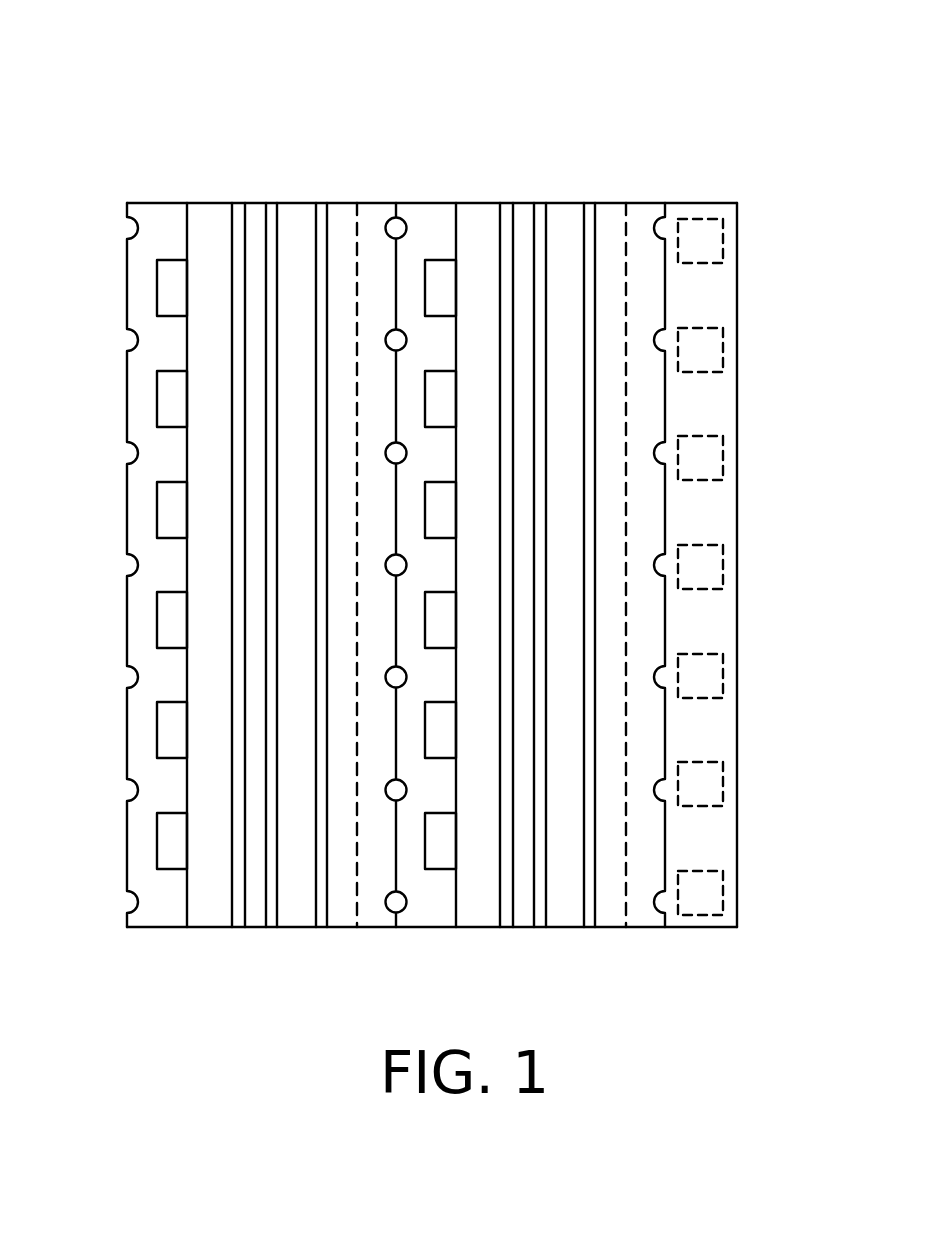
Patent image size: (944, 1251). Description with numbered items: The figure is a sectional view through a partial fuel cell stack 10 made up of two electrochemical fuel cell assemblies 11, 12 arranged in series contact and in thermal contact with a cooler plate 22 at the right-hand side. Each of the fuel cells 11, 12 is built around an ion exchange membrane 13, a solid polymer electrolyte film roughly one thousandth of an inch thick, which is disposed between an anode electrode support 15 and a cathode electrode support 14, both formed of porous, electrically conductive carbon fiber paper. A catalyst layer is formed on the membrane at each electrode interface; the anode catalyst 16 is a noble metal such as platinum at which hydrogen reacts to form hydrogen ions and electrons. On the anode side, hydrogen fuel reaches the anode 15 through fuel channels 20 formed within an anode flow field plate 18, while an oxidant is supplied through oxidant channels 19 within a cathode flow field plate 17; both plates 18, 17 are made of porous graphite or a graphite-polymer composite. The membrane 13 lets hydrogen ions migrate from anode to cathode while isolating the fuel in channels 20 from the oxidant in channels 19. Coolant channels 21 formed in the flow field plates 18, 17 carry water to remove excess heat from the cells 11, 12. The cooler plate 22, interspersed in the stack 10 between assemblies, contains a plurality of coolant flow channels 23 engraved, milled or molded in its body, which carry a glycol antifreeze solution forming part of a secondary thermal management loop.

The partial fuel cell stack 10 is at (145, 88).
The fuel cell assembly 11 is at (250, 940).
The fuel cell assembly 12 is at (552, 955).
The ion exchange membrane 13 is at (254, 202).
The cathode electrode support 14 is at (297, 202).
The anode electrode support 15 is at (207, 222).
The anode catalyst 16 is at (235, 202).
The cathode flow field plate 17 is at (367, 217).
The anode flow field plate 18 is at (150, 200).
The oxidant channels 19 is at (342, 417).
The fuel channels 20 is at (178, 292).
The coolant channels 21 is at (655, 340).
The cooler plate 22 is at (698, 930).
The coolant flow channels 23 is at (700, 888).